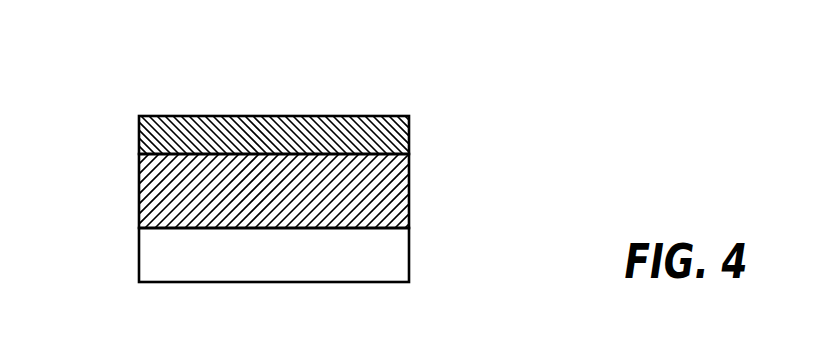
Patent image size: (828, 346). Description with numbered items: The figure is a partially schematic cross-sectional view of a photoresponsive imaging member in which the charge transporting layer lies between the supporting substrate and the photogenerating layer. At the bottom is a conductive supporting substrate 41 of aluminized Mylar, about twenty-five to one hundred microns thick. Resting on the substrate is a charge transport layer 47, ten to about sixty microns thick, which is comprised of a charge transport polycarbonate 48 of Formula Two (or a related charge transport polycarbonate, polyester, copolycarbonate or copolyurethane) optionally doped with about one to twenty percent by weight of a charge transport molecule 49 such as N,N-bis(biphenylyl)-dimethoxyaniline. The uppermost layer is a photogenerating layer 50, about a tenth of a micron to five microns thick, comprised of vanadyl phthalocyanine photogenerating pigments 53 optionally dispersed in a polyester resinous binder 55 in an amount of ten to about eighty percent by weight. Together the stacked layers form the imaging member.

The conductive supporting substrate 41 is at (410, 272).
The charge transport layer 47 is at (410, 219).
The charge transport polycarbonate 48 is at (152, 204).
The charge transport molecule 49 is at (381, 183).
The photogenerating layer 50 is at (138, 132).
The vanadyl phthalocyanine photogenerating pigments 53 is at (176, 128).
The polyester resinous binder 55 is at (277, 128).